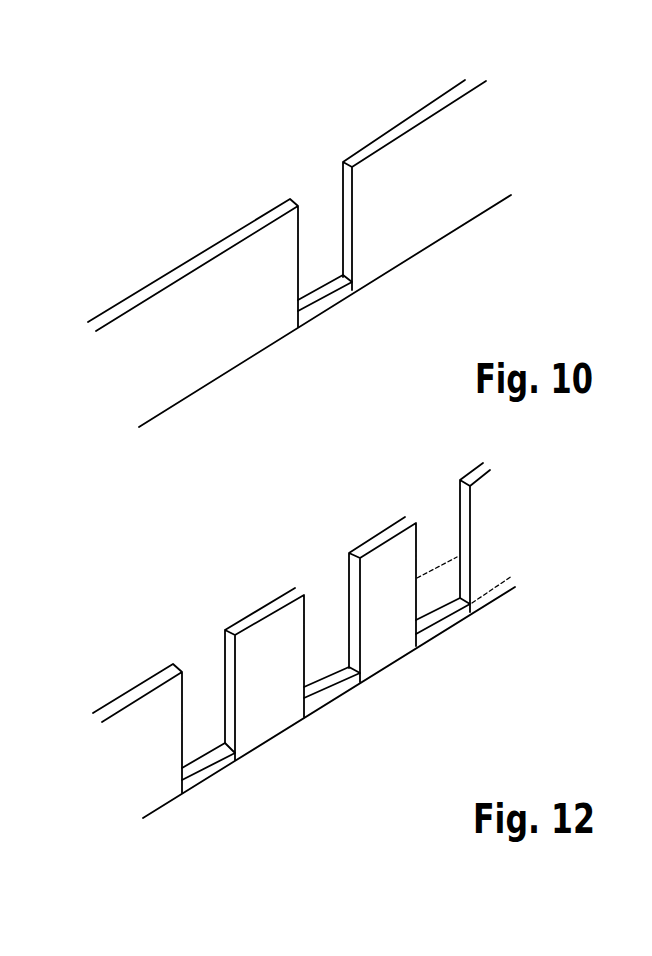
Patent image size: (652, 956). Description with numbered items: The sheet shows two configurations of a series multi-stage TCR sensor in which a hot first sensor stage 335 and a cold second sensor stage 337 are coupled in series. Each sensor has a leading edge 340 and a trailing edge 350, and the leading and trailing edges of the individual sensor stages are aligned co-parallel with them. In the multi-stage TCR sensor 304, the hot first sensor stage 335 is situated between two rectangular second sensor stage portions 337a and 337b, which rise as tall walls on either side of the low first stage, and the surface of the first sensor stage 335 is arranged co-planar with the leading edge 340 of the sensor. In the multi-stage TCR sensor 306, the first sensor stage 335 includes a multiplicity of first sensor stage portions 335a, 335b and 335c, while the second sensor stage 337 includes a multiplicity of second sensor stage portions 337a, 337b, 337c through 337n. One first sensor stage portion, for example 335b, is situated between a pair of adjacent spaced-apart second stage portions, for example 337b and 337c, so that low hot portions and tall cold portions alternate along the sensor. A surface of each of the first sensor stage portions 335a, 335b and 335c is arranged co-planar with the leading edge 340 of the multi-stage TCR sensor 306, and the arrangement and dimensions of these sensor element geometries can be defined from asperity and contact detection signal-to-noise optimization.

In FIG. 10, the multi-stage TCR sensor 304 is at (190, 117).
In FIG. 12, the multi-stage TCR sensor 306 is at (278, 514).
In FIG. 10, the first sensor stage 335 is at (328, 310).
In FIG. 12, the first sensor stage portion 335a is at (215, 768).
In FIG. 12, the first sensor stage portion 335b is at (328, 698).
In FIG. 12, the first sensor stage portion 335c is at (438, 630).
In FIG. 10, the second sensor stage 337 is at (326, 143).
In FIG. 12, the second sensor stage 337 is at (414, 740).
In FIG. 12, the second sensor stage portion 337a is at (156, 799).
In FIG. 12, the second sensor stage portion 337b is at (237, 625).
In FIG. 12, the second sensor stage portion 337c is at (390, 535).
In FIG. 12, the second sensor stage portion 337n is at (490, 528).
In FIG. 10, the leading edge 340 is at (491, 247).
In FIG. 12, the leading edge 340 is at (495, 649).
In FIG. 10, the trailing edge 350 is at (389, 99).
In FIG. 12, the trailing edge 350 is at (255, 571).